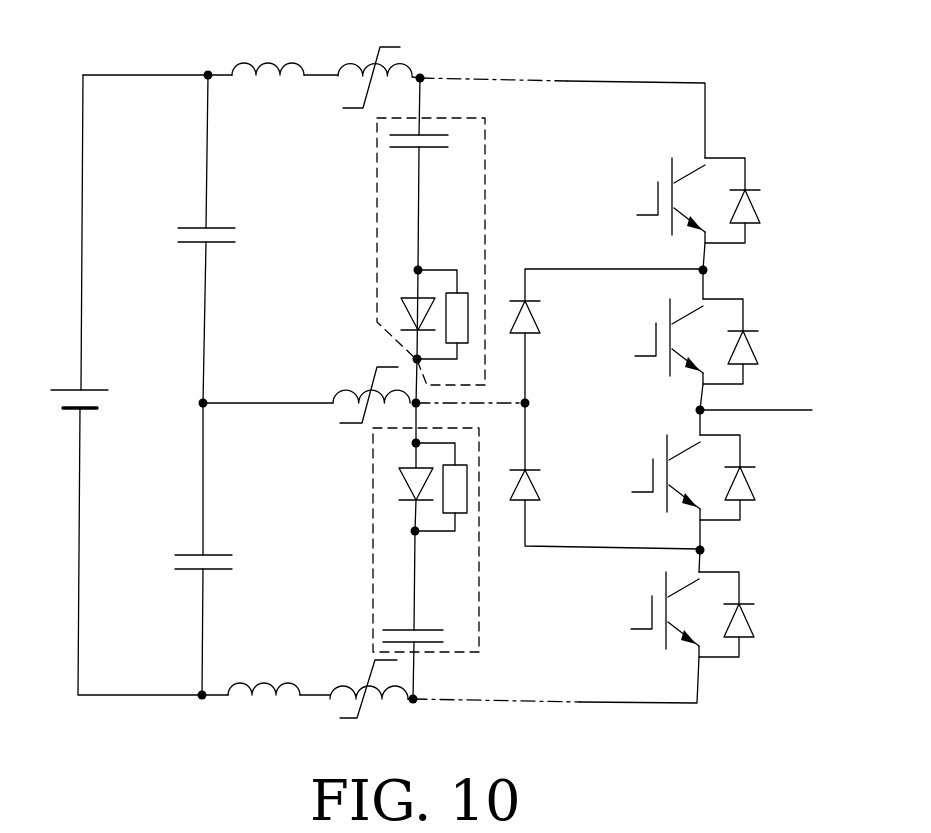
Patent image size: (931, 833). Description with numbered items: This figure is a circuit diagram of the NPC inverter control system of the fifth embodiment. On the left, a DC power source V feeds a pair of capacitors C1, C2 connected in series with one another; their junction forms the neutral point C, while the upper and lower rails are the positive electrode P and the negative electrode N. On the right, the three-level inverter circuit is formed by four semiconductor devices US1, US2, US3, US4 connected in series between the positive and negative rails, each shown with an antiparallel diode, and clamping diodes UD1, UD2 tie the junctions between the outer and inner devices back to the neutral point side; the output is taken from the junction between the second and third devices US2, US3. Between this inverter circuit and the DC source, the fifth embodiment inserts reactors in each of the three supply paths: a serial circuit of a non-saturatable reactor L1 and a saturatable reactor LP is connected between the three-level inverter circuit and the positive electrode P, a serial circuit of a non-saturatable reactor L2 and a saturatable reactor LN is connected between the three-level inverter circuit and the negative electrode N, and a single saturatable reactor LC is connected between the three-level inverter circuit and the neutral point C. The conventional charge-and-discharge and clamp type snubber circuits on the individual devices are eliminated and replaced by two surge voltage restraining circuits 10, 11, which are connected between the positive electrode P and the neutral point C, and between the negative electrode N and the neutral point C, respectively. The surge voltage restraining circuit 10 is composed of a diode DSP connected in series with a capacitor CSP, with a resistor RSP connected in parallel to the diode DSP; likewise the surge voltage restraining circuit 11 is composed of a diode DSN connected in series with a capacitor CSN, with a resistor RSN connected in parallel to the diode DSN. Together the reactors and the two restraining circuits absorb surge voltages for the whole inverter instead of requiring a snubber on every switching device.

The positive electrode P is at (183, 96).
The neutral point C is at (250, 403).
The negative electrode N is at (183, 677).
The DC power source V is at (66, 404).
The capacitor C1 is at (186, 238).
The capacitor C2 is at (182, 569).
The non-saturatable reactor L1 is at (268, 45).
The non-saturatable reactor L2 is at (264, 711).
The saturatable reactor LP is at (377, 61).
The saturatable reactor LC is at (371, 372).
The saturatable reactor LN is at (369, 700).
The surge voltage restraining circuit 10 is at (377, 191).
The surge voltage restraining circuit 11 is at (373, 556).
The capacitor CSP is at (451, 143).
The capacitor CSN is at (446, 641).
The diode DSP is at (388, 315).
The diode DSN is at (382, 487).
The resistor RSP is at (464, 323).
The resistor RSN is at (465, 483).
The clamping diode UD1 is at (560, 317).
The clamping diode UD2 is at (606, 494).
The semiconductor device US1 is at (678, 200).
The semiconductor device US2 is at (676, 341).
The semiconductor device US3 is at (674, 477).
The semiconductor device US4 is at (671, 614).